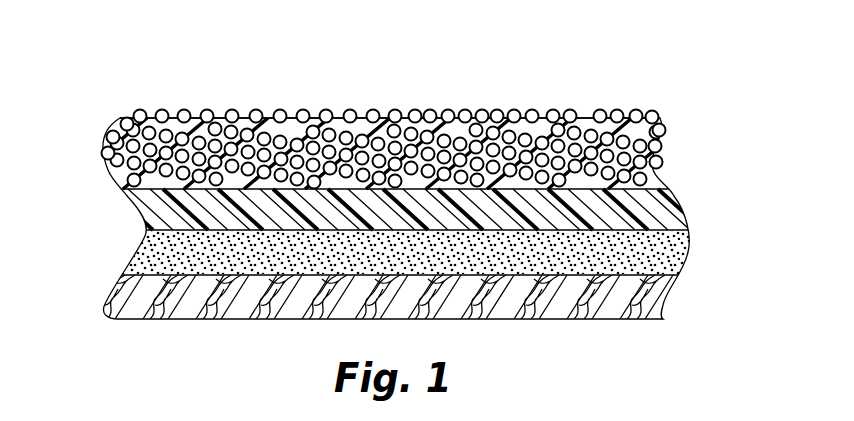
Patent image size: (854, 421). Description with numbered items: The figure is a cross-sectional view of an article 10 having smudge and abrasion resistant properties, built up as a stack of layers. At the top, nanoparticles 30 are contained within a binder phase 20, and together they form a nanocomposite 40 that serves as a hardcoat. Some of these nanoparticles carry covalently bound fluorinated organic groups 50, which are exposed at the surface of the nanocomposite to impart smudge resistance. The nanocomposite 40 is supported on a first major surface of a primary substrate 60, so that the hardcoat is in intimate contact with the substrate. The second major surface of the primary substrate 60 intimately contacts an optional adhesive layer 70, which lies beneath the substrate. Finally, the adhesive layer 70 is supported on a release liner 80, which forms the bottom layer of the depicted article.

The article 10 is at (405, 73).
The binder phase 20 is at (104, 158).
The nanoparticles 30 is at (655, 165).
The nanocomposite 40 is at (168, 112).
The covalently bound fluorinated organic groups 50 is at (598, 117).
The primary substrate 60 is at (672, 213).
The adhesive layer 70 is at (674, 259).
The release liner 80 is at (650, 304).